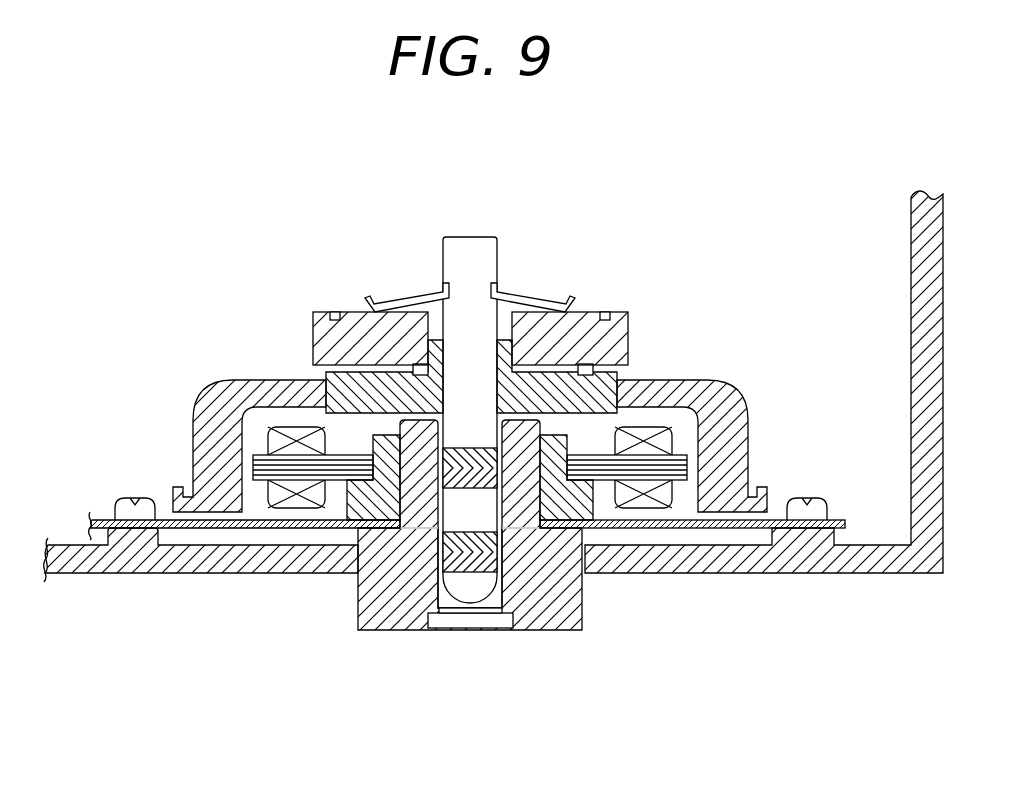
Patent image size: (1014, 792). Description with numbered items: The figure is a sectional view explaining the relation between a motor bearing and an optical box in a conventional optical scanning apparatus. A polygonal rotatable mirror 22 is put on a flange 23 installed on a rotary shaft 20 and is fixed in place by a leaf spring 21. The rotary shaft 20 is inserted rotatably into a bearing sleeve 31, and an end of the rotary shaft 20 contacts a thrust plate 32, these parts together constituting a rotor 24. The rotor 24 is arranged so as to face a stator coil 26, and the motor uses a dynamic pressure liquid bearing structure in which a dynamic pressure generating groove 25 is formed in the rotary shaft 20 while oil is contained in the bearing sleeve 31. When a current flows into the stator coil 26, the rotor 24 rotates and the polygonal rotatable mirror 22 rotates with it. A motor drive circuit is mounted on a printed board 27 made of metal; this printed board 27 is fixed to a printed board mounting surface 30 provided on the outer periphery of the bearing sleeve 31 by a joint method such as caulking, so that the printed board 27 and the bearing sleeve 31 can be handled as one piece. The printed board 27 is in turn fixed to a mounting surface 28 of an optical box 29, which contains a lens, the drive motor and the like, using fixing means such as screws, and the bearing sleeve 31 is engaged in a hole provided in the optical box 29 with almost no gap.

The rotary shaft 20 is at (475, 245).
The leaf spring 21 is at (528, 296).
The polygonal rotatable mirror 22 is at (582, 317).
The flange 23 is at (593, 373).
The rotor 24 is at (737, 405).
The dynamic pressure generating groove 25 is at (445, 550).
The stator coil 26 is at (253, 488).
The printed board 27 is at (770, 546).
The mounting surface 28 is at (128, 527).
The optical box 29 is at (907, 560).
The printed board mounting surface 30 is at (585, 563).
The bearing sleeve 31 is at (520, 573).
The thrust plate 32 is at (476, 612).